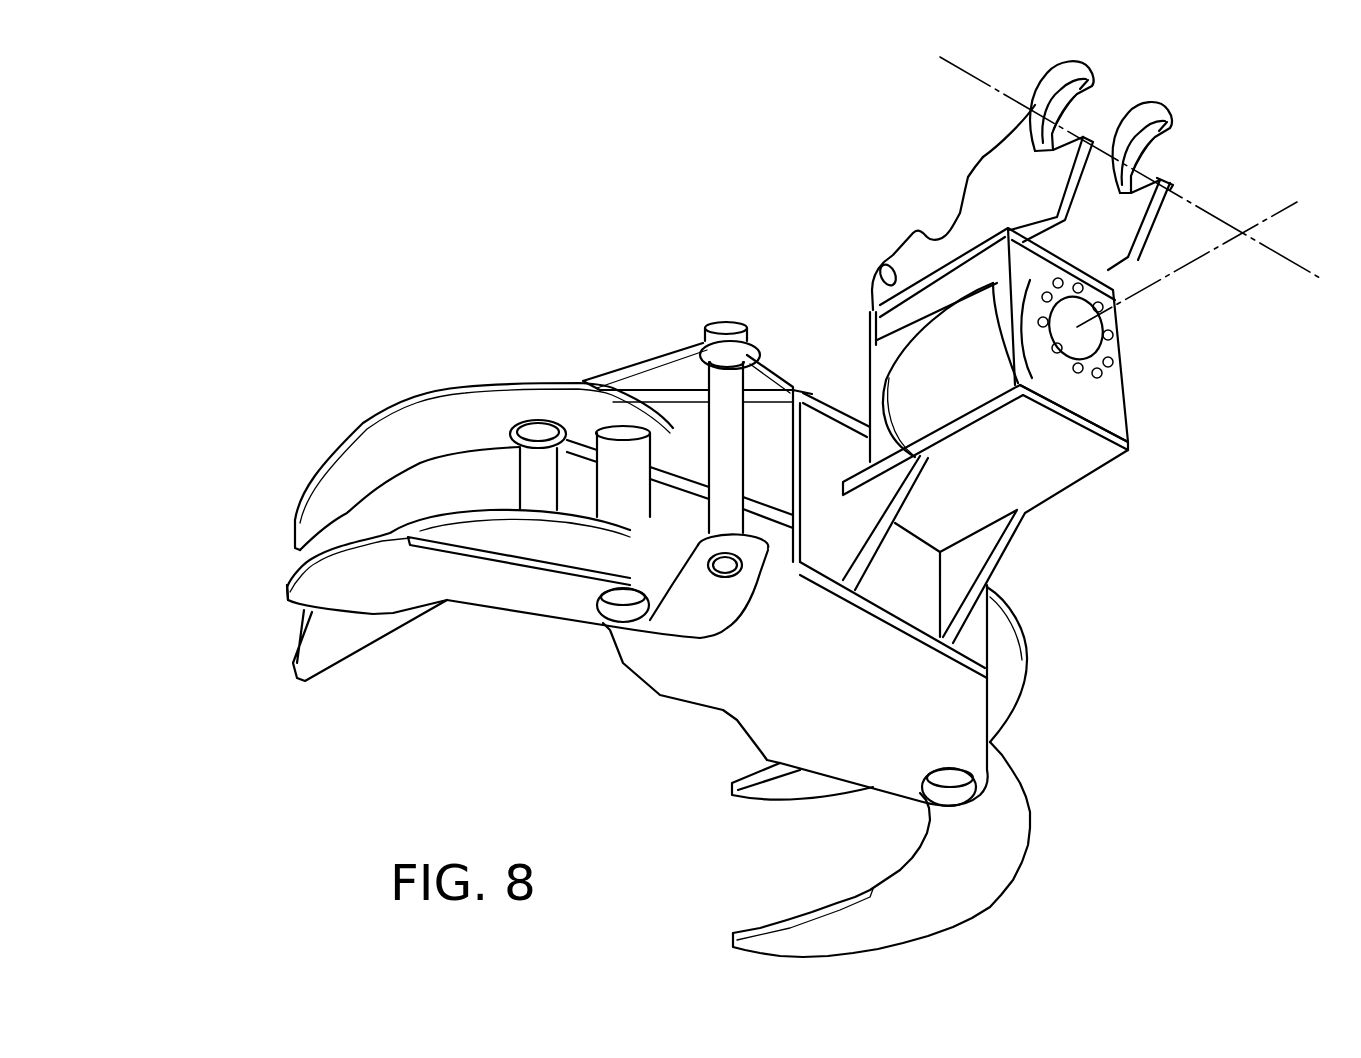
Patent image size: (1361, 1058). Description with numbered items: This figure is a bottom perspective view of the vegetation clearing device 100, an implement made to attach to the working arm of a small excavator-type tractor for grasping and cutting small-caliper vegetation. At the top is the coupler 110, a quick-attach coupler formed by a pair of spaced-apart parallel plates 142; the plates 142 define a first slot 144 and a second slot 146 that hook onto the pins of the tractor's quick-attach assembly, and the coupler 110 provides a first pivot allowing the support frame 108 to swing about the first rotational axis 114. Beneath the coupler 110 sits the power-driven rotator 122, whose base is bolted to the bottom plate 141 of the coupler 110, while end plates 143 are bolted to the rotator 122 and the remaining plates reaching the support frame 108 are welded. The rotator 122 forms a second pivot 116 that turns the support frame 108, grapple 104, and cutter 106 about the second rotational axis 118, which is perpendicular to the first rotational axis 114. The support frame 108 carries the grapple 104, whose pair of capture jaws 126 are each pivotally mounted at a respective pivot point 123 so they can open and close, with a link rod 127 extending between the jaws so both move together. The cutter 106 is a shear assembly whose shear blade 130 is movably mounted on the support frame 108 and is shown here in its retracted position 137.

The vegetation clearing device 100 is at (1175, 841).
The grapple 104 is at (735, 843).
The cutter 106 is at (434, 632).
The support frame 108 is at (638, 673).
The coupler 110 is at (1186, 90).
The first rotational axis 114 is at (988, 88).
The second pivot 116 is at (1154, 353).
The second rotational axis 118 is at (1160, 283).
The rotator 122 is at (910, 363).
The pivot point 123 is at (627, 617).
The capture jaw 126 is at (368, 418).
The link rod 127 is at (525, 428).
The shear blade 130 is at (543, 615).
The retracted position 137 is at (249, 593).
The bottom plate 141 is at (895, 252).
The parallel plates 142 is at (992, 182).
The end plates 143 is at (880, 420).
The first slot 144 is at (1005, 139).
The second slot 146 is at (920, 215).